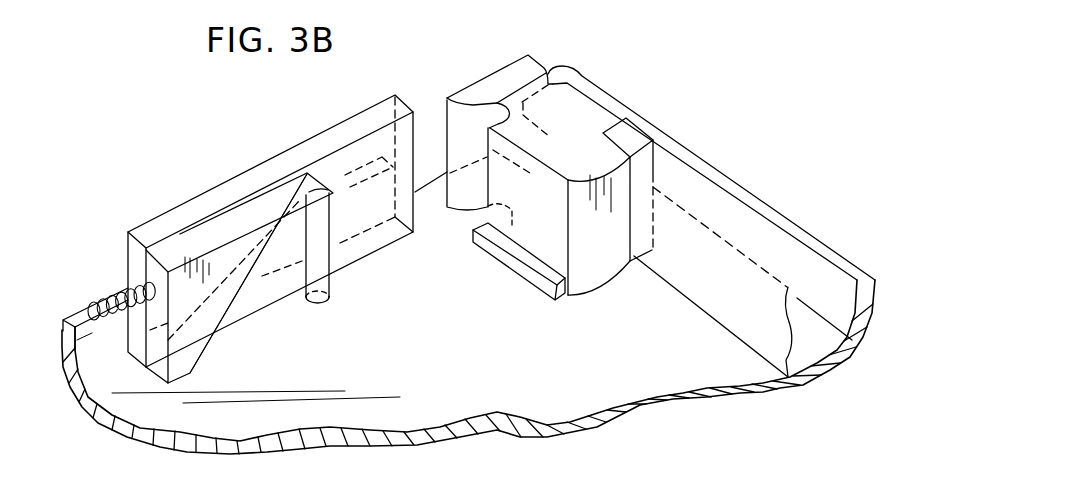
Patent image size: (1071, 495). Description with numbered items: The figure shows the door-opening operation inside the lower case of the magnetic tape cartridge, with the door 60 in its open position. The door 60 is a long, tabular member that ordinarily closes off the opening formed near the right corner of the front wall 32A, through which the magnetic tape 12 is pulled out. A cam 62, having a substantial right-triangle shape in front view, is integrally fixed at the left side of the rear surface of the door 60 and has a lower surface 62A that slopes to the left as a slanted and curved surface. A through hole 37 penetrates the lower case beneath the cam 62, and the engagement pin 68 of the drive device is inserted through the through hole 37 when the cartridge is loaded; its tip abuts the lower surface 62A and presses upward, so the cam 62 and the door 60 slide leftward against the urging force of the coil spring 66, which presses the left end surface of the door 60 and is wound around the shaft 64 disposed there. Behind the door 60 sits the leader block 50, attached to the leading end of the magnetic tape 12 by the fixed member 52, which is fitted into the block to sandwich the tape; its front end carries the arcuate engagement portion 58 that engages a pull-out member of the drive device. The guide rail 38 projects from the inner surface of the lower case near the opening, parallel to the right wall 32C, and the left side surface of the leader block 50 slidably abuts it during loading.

The magnetic tape 12 is at (763, 322).
The front wall 32A is at (64, 318).
The right wall 32C is at (775, 245).
The through hole 37 is at (333, 292).
The guide rail 38 is at (527, 270).
The leader block 50 is at (603, 257).
The fixed member 52 is at (637, 141).
The engagement portion 58 is at (502, 113).
The door 60 is at (268, 170).
The cam 62 is at (210, 230).
The lower surface 62A is at (258, 275).
The shaft 64 is at (95, 312).
The coil spring 66 is at (96, 348).
The engagement pin 68 is at (300, 258).